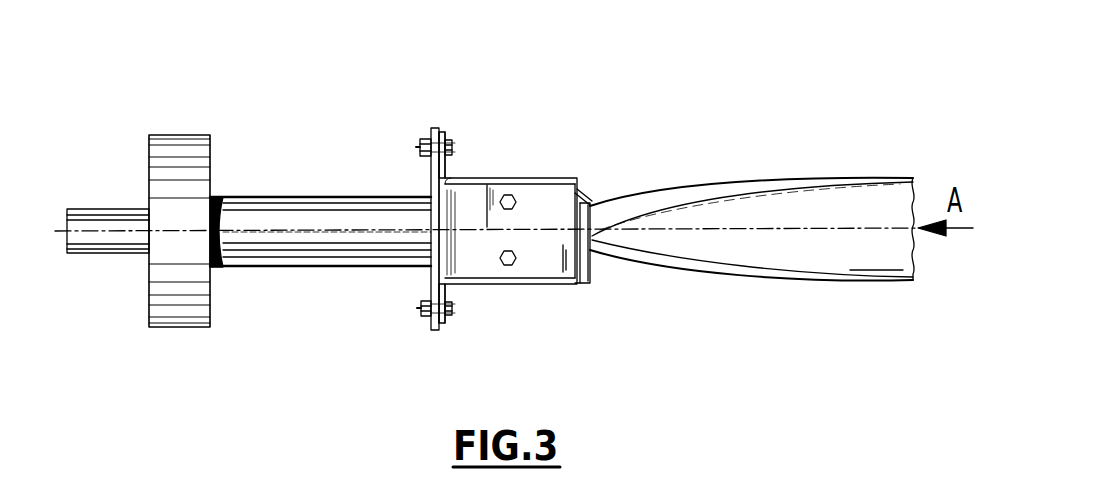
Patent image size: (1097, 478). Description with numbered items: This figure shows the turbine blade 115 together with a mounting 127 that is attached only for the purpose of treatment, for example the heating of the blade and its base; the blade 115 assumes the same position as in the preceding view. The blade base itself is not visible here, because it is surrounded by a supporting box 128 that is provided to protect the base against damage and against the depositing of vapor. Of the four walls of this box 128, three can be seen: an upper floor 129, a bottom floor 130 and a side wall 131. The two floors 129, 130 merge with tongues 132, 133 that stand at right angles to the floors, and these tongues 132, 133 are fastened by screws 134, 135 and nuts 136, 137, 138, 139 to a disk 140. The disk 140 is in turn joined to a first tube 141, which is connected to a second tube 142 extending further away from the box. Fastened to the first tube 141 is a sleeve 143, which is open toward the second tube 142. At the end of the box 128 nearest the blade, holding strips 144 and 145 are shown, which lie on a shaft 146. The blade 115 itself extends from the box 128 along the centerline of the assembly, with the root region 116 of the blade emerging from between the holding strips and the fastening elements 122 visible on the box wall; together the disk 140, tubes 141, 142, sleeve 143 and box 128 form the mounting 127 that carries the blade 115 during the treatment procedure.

The turbine blade 115 is at (795, 152).
The blade root portion 116 is at (700, 181).
The fastening bolts 122 is at (573, 217).
The mounting 127 is at (309, 160).
The supporting box 128 is at (586, 143).
The upper floor 129 is at (512, 178).
The bottom floor 130 is at (527, 285).
The side wall 131 is at (546, 267).
The tongue 132 is at (443, 134).
The tongue 133 is at (442, 320).
The screw 134 is at (421, 147).
The screw 135 is at (422, 308).
The nut 136 is at (452, 147).
The nut 137 is at (424, 154).
The nut 138 is at (453, 308).
The nut 139 is at (431, 318).
The disk 140 is at (435, 270).
The first tube 141 is at (297, 255).
The second tube 142 is at (103, 220).
The sleeve 143 is at (175, 143).
The holding strip 144 is at (580, 197).
The holding strip 145 is at (583, 268).
The shaft 146 is at (588, 258).